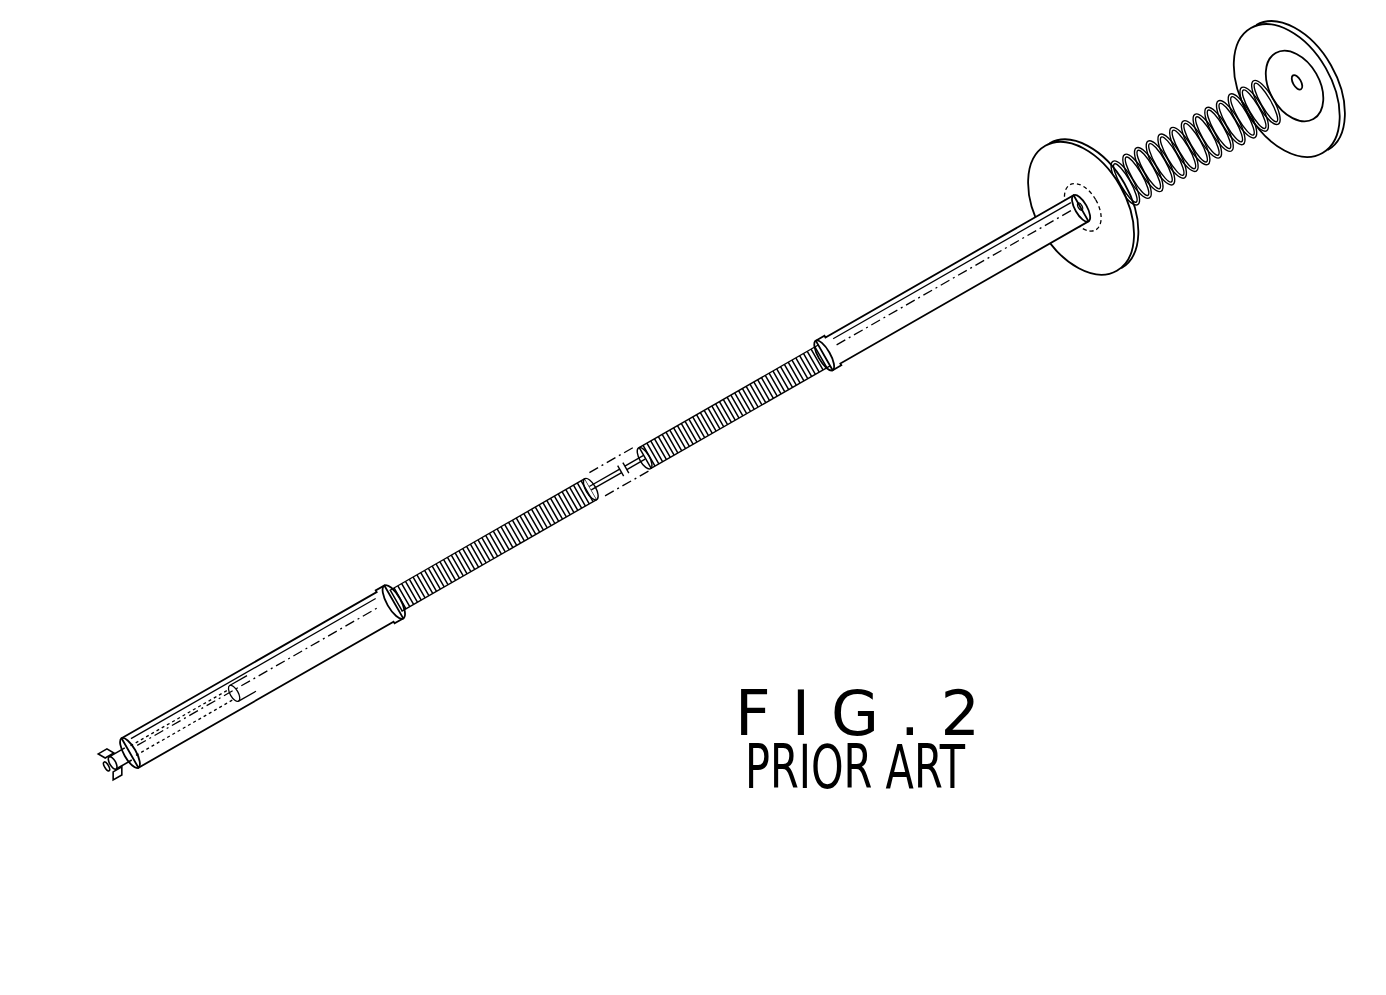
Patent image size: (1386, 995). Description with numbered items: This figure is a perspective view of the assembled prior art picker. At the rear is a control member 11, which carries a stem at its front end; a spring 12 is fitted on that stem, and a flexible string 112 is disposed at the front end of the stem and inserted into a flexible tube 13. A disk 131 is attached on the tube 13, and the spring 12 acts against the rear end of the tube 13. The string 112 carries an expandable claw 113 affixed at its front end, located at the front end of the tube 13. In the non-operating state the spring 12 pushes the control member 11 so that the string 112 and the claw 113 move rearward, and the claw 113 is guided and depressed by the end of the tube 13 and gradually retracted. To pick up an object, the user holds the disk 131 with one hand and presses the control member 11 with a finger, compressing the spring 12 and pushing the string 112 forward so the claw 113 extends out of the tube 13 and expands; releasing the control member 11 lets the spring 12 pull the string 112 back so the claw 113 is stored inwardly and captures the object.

The control member 11 is at (1320, 143).
The flexible string 112 is at (943, 293).
The expandable claw 113 is at (113, 747).
The spring 12 is at (1220, 167).
The flexible tube 13 is at (725, 393).
The disk 131 is at (1045, 180).